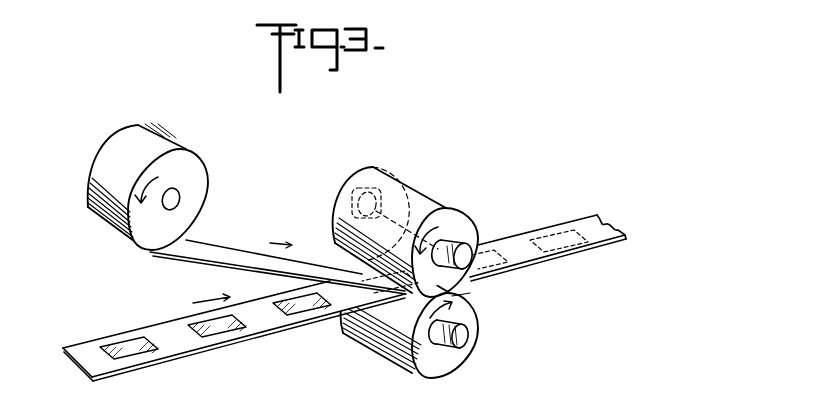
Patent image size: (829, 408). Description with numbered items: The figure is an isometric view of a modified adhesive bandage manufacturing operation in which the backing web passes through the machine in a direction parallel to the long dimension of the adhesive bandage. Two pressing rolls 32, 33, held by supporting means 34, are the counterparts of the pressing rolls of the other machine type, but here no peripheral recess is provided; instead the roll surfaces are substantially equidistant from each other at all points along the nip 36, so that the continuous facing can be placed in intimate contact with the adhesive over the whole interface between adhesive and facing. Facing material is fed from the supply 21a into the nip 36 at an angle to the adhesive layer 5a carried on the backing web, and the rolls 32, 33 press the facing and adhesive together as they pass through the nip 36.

The supply 21a is at (177, 139).
The adhesive layer 5a is at (164, 332).
The roll 32 is at (405, 178).
The roll 33 is at (473, 329).
The supporting means 34 is at (351, 202).
The nip 36 is at (452, 296).